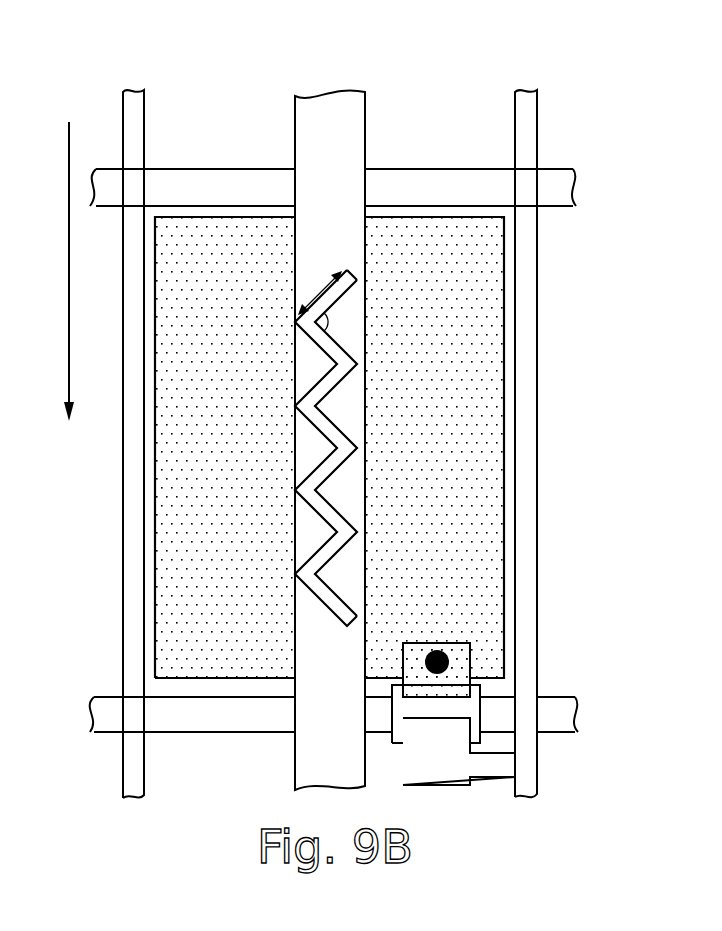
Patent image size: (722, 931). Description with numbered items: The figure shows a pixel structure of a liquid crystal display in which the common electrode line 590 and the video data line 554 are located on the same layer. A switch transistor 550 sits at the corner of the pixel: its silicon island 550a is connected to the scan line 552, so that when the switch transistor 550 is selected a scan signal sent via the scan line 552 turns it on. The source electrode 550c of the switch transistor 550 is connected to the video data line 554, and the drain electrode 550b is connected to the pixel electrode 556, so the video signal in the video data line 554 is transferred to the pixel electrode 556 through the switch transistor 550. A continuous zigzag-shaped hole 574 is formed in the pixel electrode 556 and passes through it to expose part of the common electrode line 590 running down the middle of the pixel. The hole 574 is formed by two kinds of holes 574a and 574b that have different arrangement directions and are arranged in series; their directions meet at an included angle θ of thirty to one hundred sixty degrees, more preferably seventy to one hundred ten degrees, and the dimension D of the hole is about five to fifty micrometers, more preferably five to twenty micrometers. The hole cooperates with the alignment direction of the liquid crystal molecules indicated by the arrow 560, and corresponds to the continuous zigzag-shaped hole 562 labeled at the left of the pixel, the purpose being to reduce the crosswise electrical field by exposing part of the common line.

The switch transistor 550 is at (642, 668).
The silicon island 550a is at (460, 708).
The drain electrode 550b is at (460, 662).
The source electrode 550c is at (460, 765).
The scan line 552 is at (575, 192).
The video data line 554 is at (138, 90).
The pixel electrode 556 is at (468, 527).
The arrow 560 is at (69, 270).
The continuous zigzag-shaped hole 562 is at (13, 340).
The continuous zigzag-shaped hole 574 is at (489, 439).
The hole 574a is at (333, 297).
The hole 574b is at (333, 350).
The common electrode line 590 is at (330, 92).